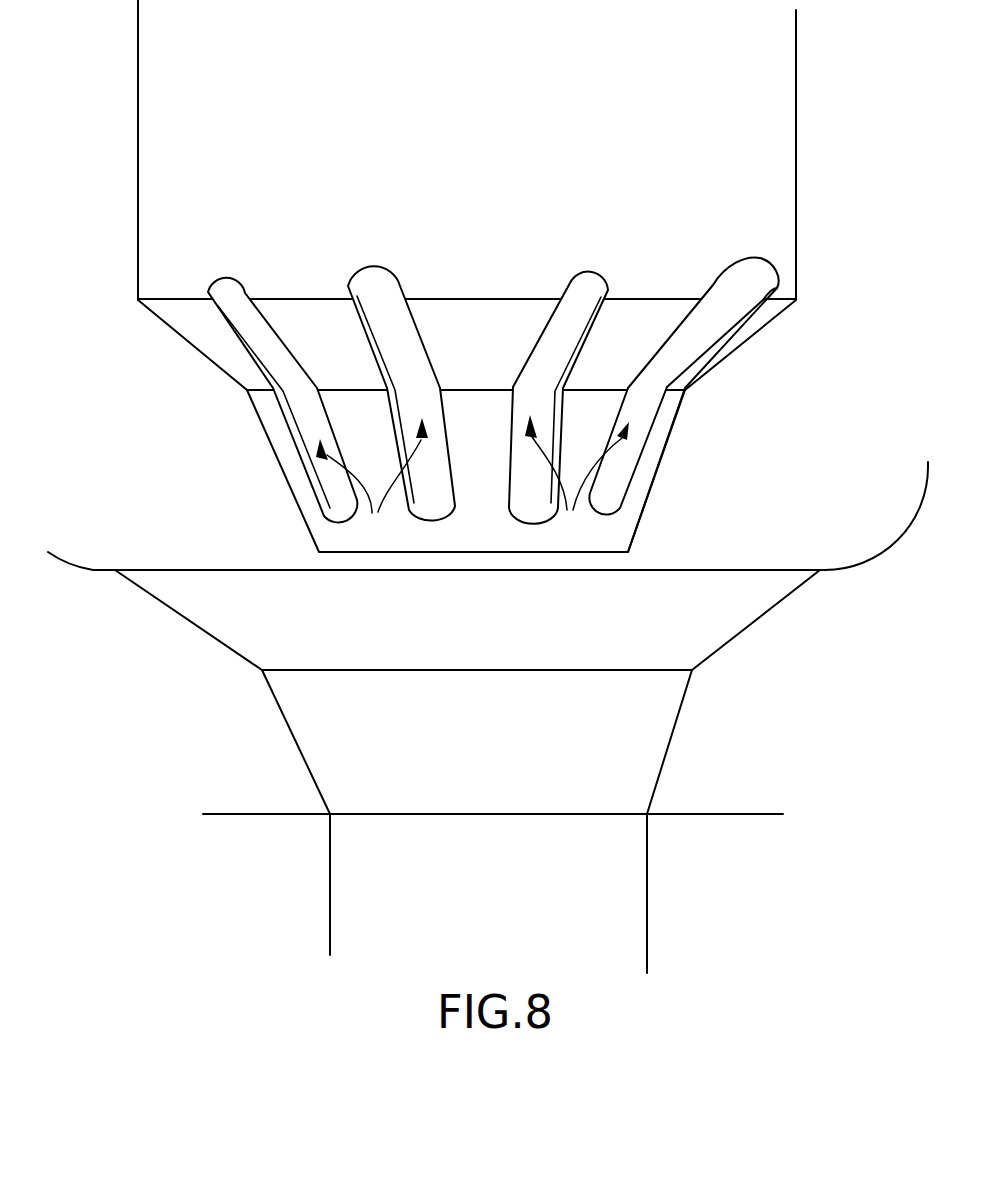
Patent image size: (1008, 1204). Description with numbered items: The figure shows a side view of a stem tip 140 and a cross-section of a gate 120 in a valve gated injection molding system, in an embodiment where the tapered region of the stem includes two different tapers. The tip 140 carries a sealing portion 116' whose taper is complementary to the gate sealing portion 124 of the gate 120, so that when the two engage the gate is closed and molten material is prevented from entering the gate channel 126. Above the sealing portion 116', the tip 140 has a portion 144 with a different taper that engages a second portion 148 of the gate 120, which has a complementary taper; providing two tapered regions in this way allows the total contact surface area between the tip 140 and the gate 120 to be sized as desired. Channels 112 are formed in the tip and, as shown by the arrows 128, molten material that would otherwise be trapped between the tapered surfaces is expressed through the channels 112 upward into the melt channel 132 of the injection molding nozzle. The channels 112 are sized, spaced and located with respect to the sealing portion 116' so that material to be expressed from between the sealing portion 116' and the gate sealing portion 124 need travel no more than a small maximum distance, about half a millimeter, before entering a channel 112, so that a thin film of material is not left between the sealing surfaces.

The channels 112 is at (340, 515).
The sealing portion 116' is at (470, 474).
The gate 120 is at (493, 893).
The gate sealing portion 124 is at (479, 742).
The gate channel 126 is at (503, 847).
The arrows 128 is at (472, 483).
The melt channel 132 is at (847, 391).
The tip 140 is at (815, 60).
The portion 144 is at (192, 354).
The second portion 148 is at (185, 627).